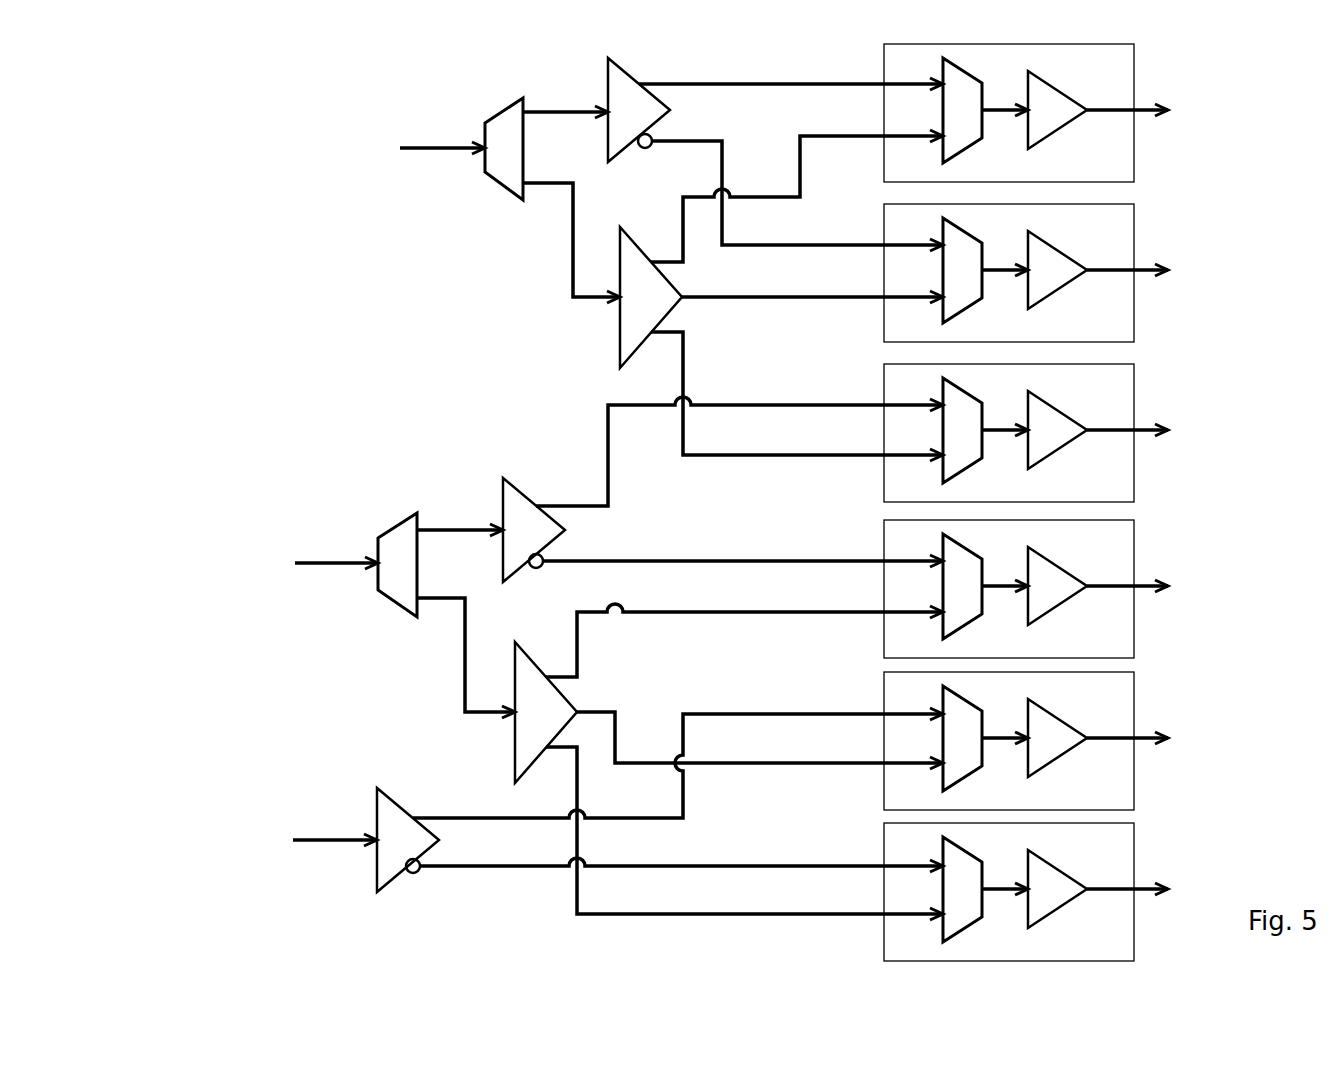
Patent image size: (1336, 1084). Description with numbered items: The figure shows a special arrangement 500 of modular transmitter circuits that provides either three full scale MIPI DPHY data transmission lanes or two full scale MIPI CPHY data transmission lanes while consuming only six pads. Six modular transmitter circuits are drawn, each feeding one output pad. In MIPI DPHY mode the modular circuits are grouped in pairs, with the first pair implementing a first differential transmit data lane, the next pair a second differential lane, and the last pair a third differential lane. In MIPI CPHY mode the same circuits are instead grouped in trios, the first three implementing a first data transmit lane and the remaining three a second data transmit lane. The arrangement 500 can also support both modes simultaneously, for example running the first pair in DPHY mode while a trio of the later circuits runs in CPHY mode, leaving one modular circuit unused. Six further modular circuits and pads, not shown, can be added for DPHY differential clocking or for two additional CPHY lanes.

The special arrangement of modular transmitter circuits 500 is at (135, 67).